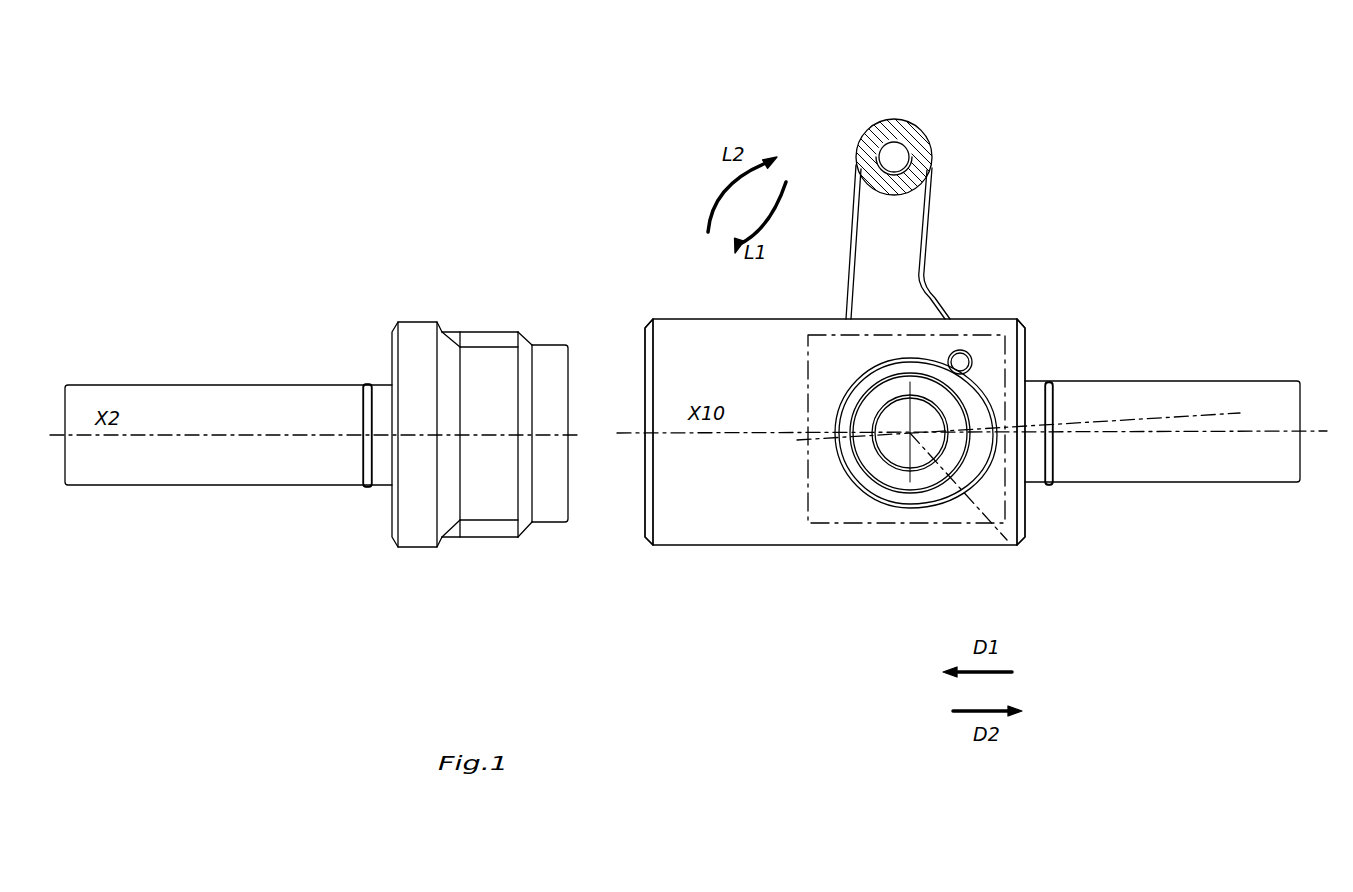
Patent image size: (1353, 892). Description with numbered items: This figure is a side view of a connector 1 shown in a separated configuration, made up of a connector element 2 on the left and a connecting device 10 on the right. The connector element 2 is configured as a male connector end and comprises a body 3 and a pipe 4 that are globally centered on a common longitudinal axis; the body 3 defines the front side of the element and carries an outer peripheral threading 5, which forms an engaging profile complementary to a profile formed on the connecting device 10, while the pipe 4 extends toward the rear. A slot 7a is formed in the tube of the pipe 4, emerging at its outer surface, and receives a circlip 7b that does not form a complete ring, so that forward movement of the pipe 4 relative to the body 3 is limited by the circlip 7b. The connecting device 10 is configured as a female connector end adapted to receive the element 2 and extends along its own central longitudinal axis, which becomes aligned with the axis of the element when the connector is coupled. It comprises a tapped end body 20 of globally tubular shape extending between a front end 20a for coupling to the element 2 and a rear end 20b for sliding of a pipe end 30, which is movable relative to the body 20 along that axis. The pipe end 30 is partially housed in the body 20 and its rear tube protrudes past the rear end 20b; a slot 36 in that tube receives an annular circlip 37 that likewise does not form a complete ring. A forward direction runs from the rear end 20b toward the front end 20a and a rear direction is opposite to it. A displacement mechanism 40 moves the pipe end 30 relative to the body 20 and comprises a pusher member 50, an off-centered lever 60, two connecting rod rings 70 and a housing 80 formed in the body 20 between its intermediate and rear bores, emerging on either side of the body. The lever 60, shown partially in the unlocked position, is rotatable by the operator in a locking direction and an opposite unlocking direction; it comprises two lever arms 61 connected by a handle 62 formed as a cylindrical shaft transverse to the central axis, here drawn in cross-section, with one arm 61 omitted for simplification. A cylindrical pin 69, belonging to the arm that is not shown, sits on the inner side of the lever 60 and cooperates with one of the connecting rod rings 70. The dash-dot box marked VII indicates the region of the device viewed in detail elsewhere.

The connector 1 is at (558, 132).
The connector element 2 is at (488, 208).
The connecting device 10 is at (566, 198).
The body 3 is at (418, 338).
The pipe 4 is at (243, 395).
The outer peripheral threading 5 is at (482, 326).
The slot 7a is at (367, 376).
The circlip 7b is at (368, 490).
The end body 20 is at (730, 547).
The front end 20a is at (663, 570).
The rear end 20b is at (1066, 556).
The pipe end 30 is at (1200, 467).
The slot 36 is at (1059, 366).
The circlip 37 is at (1050, 490).
The displacement mechanism 40 is at (989, 140).
The pusher member 50 is at (893, 455).
The off-centered lever 60 is at (892, 185).
The lever arm 61 is at (870, 218).
The handle 62 is at (894, 130).
The cylindrical pin 69 is at (975, 365).
The connecting rod ring 70 is at (900, 500).
The housing 80 is at (936, 470).
The section VII is at (968, 335).